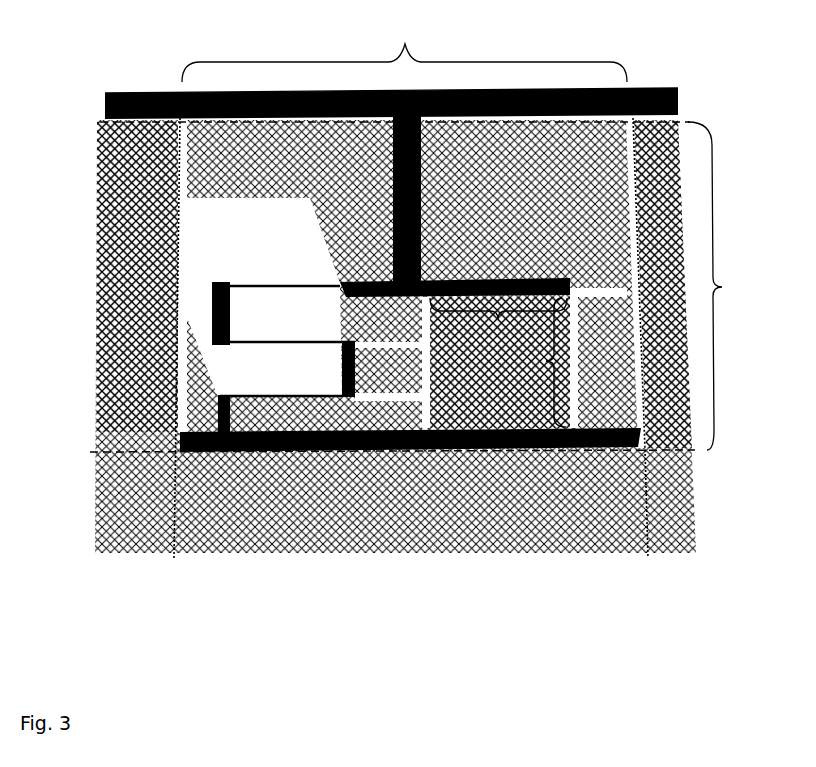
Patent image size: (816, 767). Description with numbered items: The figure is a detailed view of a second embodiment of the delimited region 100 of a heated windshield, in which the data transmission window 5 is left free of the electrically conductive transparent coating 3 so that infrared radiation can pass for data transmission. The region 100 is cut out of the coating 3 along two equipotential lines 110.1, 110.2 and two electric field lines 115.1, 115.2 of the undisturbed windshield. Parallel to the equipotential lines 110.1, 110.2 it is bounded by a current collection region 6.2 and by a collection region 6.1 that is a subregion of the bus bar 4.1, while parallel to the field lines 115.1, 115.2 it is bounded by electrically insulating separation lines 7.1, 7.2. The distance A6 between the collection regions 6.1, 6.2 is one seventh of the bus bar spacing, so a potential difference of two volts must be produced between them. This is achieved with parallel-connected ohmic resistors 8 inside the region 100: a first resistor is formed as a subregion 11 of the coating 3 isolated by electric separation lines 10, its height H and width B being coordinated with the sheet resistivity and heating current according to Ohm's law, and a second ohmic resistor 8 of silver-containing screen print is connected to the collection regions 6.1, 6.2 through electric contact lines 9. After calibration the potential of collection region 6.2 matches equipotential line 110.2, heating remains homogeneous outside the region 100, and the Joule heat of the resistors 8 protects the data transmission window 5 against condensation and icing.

The electrically conductive transparent coating 3 is at (200, 183).
The bus bar 4.1 is at (138, 92).
The data transmission window 5 is at (207, 235).
The collection region 6.1 is at (391, 69).
The collection region 6.2 is at (555, 450).
The electrically insulating separation line 7.1 is at (171, 380).
The electrically insulating separation line 7.2 is at (640, 250).
The ohmic resistor 8 is at (212, 315).
The electric contact line 9 is at (287, 404).
The electric separation line 10 is at (416, 405).
The subregion of the region as an ohmic resistor 11 is at (537, 382).
The delimited region 100 is at (637, 191).
The equipotential line 110.1 is at (94, 120).
The equipotential line 110.2 is at (85, 449).
The electric field line 115.1 is at (170, 569).
The electric field line 115.2 is at (651, 568).
The distance between the collection regions A6 is at (732, 286).
The width B is at (498, 325).
The height H is at (537, 362).